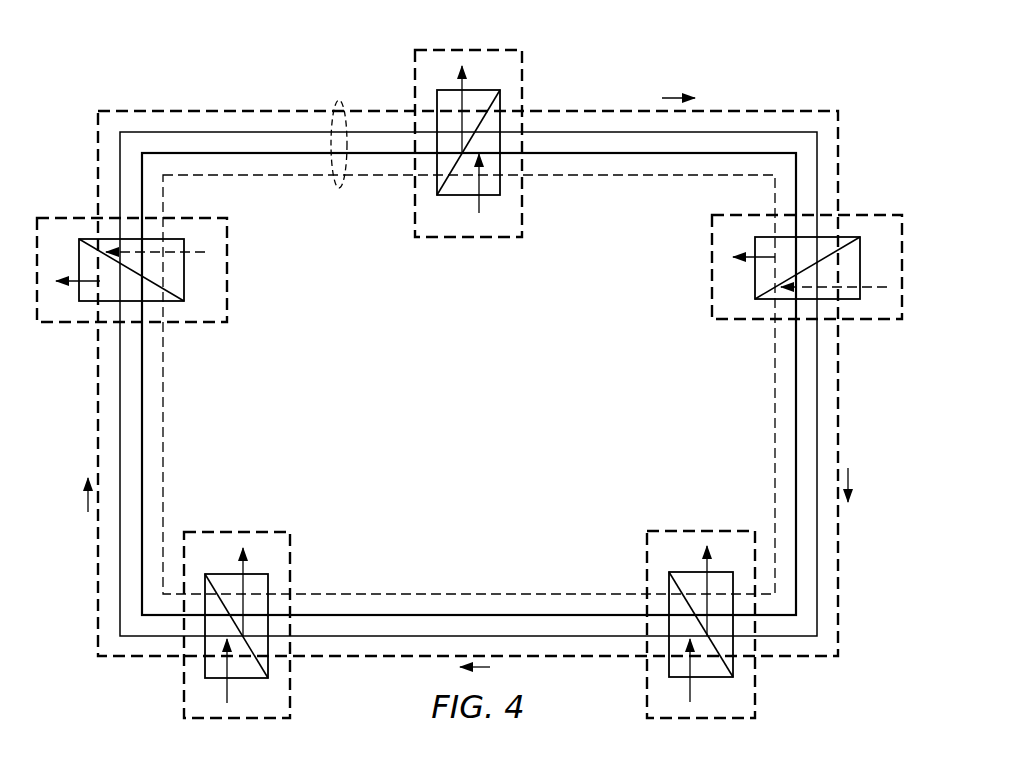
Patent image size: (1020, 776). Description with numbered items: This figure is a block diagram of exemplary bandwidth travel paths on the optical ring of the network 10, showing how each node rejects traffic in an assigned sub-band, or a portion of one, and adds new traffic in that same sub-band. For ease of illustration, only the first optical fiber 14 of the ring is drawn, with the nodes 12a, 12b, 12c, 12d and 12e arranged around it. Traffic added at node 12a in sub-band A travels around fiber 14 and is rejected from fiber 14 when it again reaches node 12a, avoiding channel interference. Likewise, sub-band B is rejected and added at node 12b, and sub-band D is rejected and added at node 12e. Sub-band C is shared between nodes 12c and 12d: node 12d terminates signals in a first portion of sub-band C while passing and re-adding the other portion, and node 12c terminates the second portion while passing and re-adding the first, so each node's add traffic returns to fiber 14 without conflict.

The network 10 is at (228, 80).
The first optical fiber 14 is at (338, 100).
The node 12a is at (480, 242).
The node 12b is at (708, 281).
The node 12c is at (667, 528).
The node 12d is at (249, 529).
The node 12e is at (231, 258).